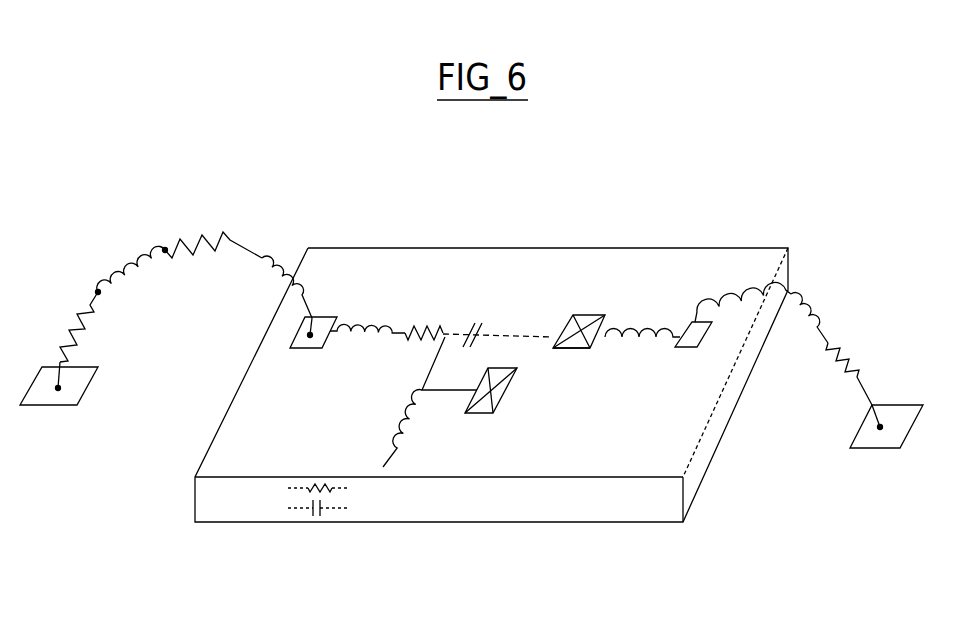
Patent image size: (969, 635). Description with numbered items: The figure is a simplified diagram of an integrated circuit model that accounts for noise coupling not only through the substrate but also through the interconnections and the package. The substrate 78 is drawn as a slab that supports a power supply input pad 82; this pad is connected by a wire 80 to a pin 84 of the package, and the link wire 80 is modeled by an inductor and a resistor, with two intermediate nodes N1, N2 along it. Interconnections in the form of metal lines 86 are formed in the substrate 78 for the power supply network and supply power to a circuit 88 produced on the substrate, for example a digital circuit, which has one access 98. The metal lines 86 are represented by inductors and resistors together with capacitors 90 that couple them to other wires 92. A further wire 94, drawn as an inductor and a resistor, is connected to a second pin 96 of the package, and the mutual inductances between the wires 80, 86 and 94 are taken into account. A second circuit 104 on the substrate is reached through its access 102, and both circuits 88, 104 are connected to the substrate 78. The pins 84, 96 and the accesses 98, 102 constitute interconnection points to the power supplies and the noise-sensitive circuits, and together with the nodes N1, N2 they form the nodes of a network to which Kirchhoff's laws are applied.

The substrate 78 is at (553, 460).
The wire 80 is at (214, 214).
The power supply input pad 82 is at (320, 318).
The pin 84 is at (63, 405).
The metal lines 86 is at (389, 307).
The circuit 88 is at (498, 395).
The capacitors 90 is at (480, 330).
The other wires 92 is at (637, 337).
The wire 94 is at (812, 274).
The pin 96 is at (897, 413).
The access 98 is at (480, 393).
The access 102 is at (602, 317).
The circuit 104 is at (567, 350).
The node N1 is at (98, 292).
The node N2 is at (165, 250).